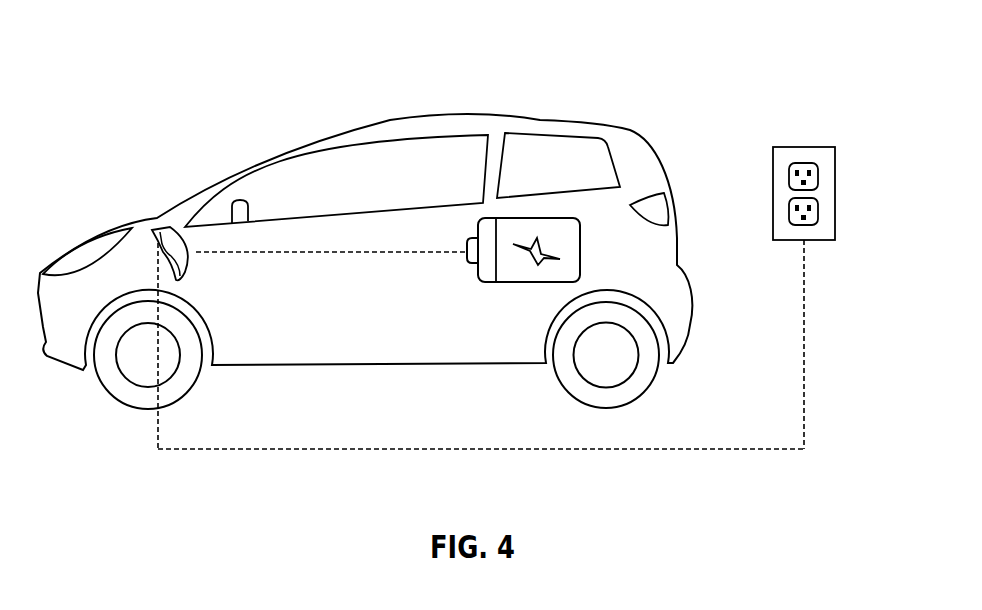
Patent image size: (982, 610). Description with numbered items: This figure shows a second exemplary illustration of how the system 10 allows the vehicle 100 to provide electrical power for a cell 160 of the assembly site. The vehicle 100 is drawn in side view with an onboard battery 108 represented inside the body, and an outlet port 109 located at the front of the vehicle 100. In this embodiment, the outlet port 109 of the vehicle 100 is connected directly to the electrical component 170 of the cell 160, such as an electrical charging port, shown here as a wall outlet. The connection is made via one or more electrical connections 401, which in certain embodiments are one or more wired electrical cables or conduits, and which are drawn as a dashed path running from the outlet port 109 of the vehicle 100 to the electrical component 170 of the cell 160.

The system 10 is at (106, 76).
The vehicle 100 is at (203, 187).
The battery 108 is at (545, 218).
The outlet port 109 is at (157, 225).
The cell 160 is at (758, 402).
The electrical component 170 is at (835, 193).
The electrical connection 401 is at (667, 450).